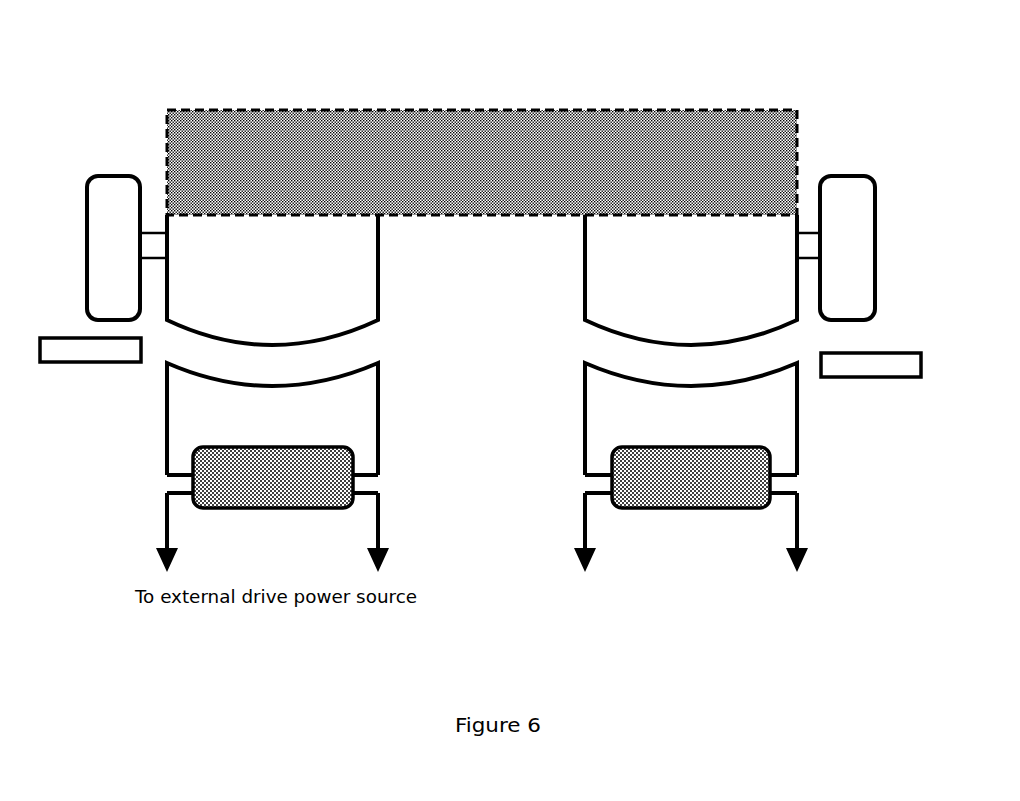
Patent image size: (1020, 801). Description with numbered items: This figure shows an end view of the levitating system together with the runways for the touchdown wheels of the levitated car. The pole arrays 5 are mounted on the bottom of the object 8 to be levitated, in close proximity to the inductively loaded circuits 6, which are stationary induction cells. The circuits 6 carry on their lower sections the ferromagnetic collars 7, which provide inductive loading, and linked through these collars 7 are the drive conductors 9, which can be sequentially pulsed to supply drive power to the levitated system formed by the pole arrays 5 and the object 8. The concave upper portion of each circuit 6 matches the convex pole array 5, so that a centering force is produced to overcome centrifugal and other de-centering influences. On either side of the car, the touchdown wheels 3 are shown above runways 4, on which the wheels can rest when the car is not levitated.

The touchdown wheels 3 is at (113, 170).
The rail 4 is at (87, 370).
The pole arrays 5 is at (584, 243).
The inductively loaded circuits 6 is at (584, 400).
The ferromagnetic collars 7 is at (258, 492).
The object to be levitated 8 is at (292, 108).
The drive conductors 9 is at (390, 532).